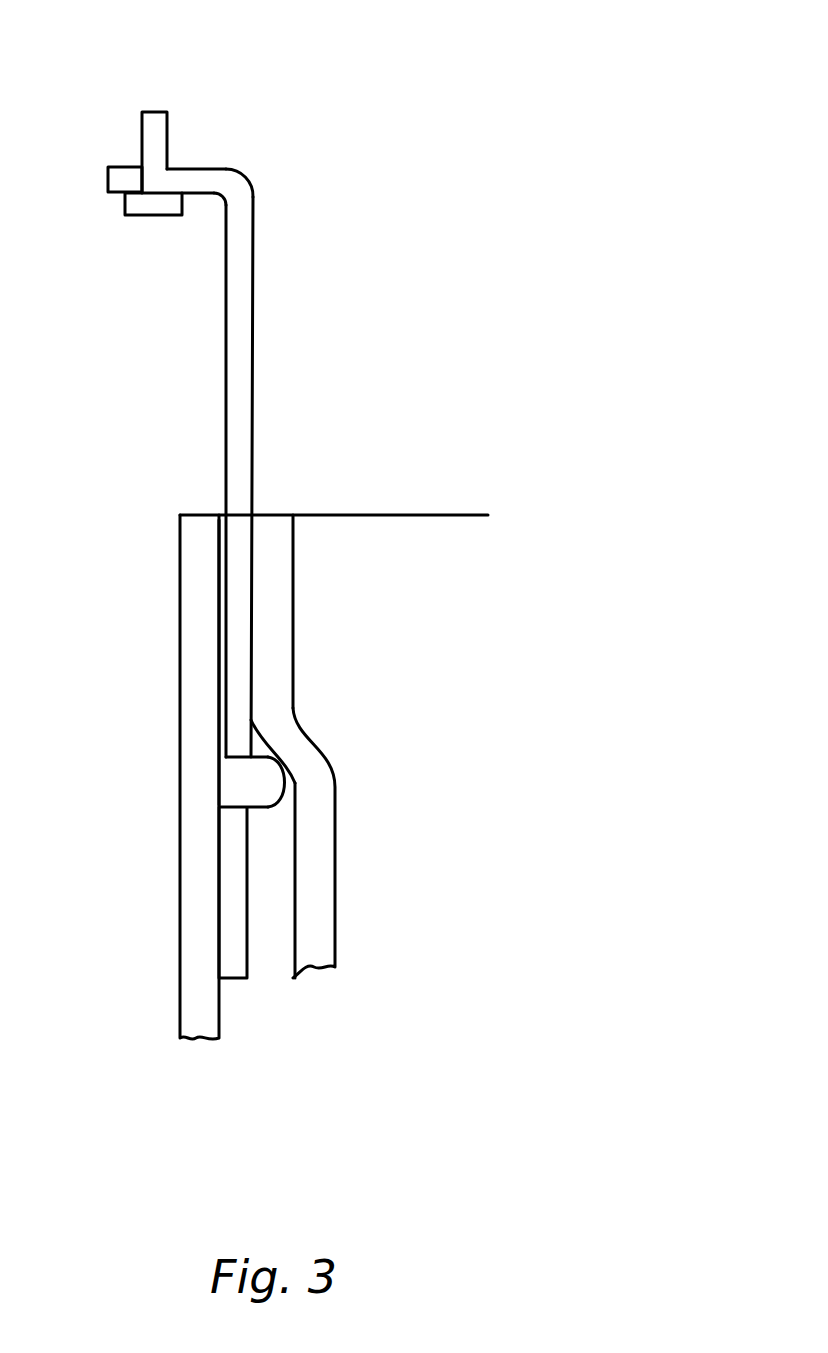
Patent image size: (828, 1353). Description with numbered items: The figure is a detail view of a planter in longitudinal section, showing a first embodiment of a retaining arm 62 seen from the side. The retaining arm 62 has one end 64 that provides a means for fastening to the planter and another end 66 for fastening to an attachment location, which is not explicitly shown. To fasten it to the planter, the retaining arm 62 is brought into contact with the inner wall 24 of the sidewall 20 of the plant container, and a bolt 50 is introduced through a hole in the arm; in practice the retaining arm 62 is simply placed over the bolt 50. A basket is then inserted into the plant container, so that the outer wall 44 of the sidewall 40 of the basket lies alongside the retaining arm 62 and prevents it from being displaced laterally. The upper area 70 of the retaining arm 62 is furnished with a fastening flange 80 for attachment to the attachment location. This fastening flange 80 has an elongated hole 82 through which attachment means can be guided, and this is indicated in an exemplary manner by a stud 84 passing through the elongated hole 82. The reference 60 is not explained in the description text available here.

The sidewall 20 is at (178, 793).
The inner wall 24 is at (225, 642).
The sidewall 40 is at (337, 880).
The outer wall 44 is at (249, 582).
The bolt 50 is at (254, 795).
The clip leg 60 is at (257, 397).
The retaining arm 62 is at (247, 232).
The end 64 is at (237, 982).
The end 66 is at (108, 173).
The upper area 70 is at (213, 582).
The fastening flange 80 is at (178, 165).
The elongated hole 82 is at (152, 213).
The stud 84 is at (136, 128).